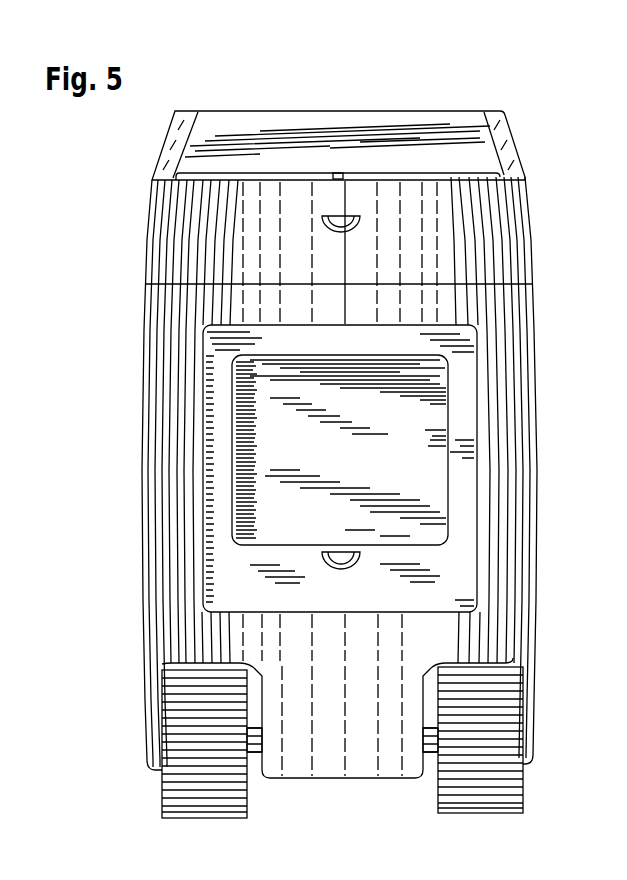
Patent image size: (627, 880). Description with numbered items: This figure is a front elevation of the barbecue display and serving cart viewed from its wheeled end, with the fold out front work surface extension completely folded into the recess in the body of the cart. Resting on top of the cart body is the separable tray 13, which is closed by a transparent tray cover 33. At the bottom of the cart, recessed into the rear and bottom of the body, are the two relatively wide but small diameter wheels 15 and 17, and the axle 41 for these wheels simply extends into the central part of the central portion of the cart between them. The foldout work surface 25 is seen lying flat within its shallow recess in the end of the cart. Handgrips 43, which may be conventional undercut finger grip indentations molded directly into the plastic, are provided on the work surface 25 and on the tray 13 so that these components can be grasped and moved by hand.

The tray 13 is at (535, 207).
The wheel 15 is at (165, 800).
The wheel 17 is at (523, 797).
The foldout work surface 25 is at (450, 427).
The transparent tray cover 33 is at (433, 110).
The axle 41 is at (423, 745).
The handgrips 43 is at (348, 231).